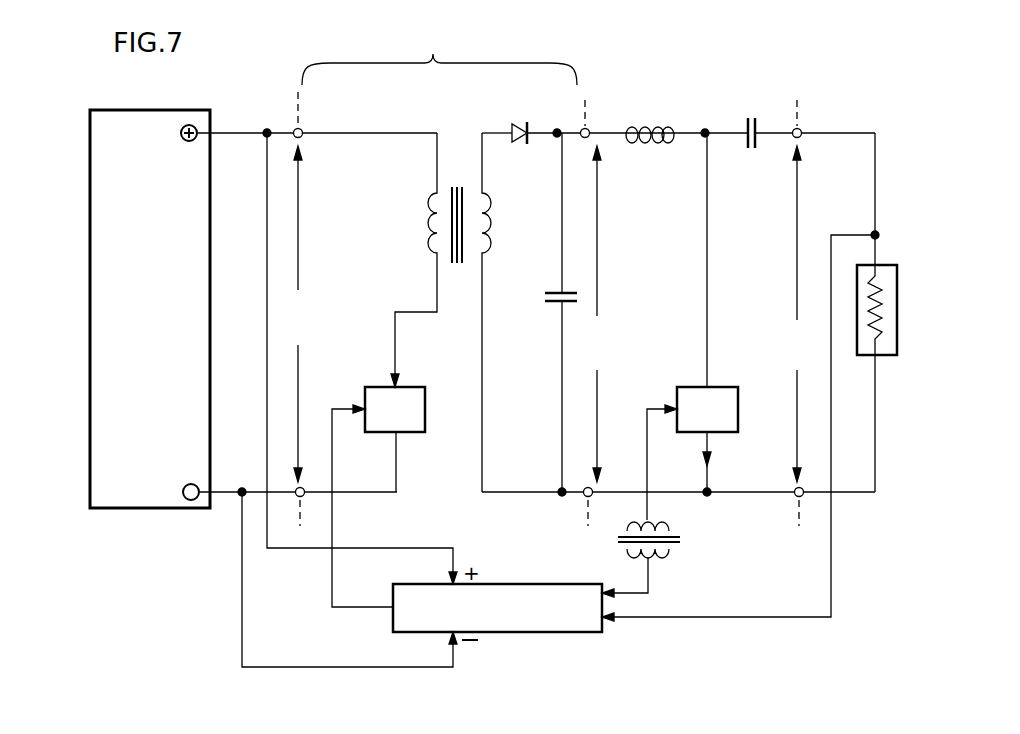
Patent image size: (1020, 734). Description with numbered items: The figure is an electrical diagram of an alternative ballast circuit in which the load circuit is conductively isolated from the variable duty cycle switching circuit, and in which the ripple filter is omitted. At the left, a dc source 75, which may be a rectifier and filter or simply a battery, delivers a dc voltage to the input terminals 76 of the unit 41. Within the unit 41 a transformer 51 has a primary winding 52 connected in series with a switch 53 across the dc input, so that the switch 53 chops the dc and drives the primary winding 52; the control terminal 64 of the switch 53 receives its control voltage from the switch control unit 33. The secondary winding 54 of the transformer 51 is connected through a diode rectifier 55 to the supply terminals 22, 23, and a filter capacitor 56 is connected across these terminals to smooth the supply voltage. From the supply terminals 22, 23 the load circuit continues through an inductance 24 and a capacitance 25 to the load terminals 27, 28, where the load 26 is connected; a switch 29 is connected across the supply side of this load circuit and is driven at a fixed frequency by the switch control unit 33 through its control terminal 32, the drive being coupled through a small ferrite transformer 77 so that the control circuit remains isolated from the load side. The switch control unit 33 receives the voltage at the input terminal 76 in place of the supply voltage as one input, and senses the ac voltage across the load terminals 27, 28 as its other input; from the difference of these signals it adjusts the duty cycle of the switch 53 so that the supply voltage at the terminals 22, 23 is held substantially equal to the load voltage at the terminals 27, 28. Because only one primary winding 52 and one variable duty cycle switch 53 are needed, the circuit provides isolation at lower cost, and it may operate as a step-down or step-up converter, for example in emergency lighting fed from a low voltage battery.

The dc source 75 is at (113, 109).
The input terminals 76 is at (302, 130).
The unit 41 is at (439, 58).
The transformer 51 is at (454, 294).
The primary winding 52 is at (427, 225).
The secondary winding 54 is at (492, 225).
The diode rectifier 55 is at (514, 124).
The filter capacitor 56 is at (556, 304).
The switch 53 is at (418, 387).
The control terminal 64 is at (334, 408).
The supply terminal 22 is at (589, 129).
The supply terminal 23 is at (594, 491).
The inductance 24 is at (660, 127).
The capacitance 25 is at (754, 120).
The load terminal 27 is at (800, 130).
The load terminal 28 is at (797, 496).
The load 26 is at (898, 266).
The switch 29 is at (728, 387).
The control terminal 32 is at (652, 405).
The transformer 77 is at (700, 539).
The switch control unit 33 is at (503, 583).